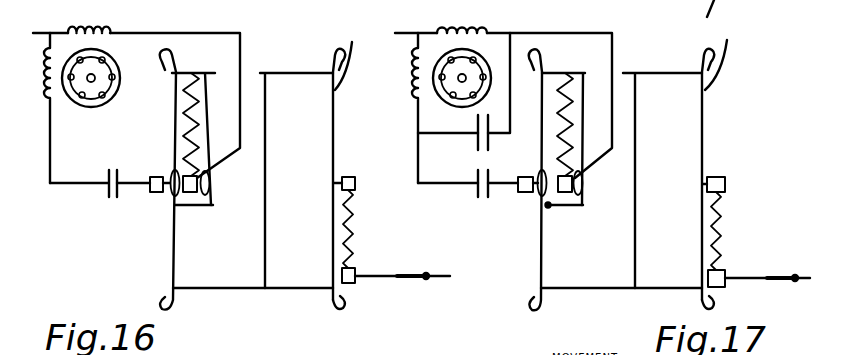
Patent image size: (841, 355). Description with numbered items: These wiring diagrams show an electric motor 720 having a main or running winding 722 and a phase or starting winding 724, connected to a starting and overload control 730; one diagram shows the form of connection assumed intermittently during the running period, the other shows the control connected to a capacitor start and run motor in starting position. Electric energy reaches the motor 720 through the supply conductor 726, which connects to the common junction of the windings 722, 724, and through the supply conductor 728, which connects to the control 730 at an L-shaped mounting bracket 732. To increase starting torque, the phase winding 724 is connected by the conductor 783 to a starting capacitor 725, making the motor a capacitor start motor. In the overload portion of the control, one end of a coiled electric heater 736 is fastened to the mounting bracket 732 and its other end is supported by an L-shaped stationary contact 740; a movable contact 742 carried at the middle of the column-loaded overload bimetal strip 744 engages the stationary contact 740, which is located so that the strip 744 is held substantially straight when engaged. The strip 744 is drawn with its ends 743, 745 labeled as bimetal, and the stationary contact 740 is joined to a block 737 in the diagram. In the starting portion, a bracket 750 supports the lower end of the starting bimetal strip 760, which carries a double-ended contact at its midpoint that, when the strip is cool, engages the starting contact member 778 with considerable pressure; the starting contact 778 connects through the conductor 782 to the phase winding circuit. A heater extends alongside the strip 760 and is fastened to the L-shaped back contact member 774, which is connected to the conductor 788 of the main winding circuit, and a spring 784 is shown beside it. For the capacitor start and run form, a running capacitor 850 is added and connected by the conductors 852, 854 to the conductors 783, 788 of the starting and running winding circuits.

In FIG. 16, the supply conductor 726 is at (39, 33).
In FIG. 17, the supply conductor 726 is at (402, 33).
In FIG. 16, the main or running winding 722 is at (111, 32).
In FIG. 17, the main or running winding 722 is at (476, 32).
In FIG. 16, the conductor 788 is at (205, 33).
In FIG. 17, the conductor 788 is at (560, 33).
In FIG. 16, the spring 784 is at (216, 90).
In FIG. 17, the spring 784 is at (590, 90).
In FIG. 16, the electric motor 720 is at (114, 92).
In FIG. 17, the electric motor 720 is at (462, 78).
In FIG. 16, the phase or starting winding 724 is at (52, 106).
In FIG. 17, the phase or starting winding 724 is at (413, 62).
In FIG. 16, the conductor 783 is at (53, 166).
In FIG. 17, the conductor 783 is at (441, 188).
In FIG. 16, the conductor 782 is at (134, 183).
In FIG. 17, the conductor 782 is at (500, 197).
In FIG. 16, the starting capacitor 725 is at (109, 198).
In FIG. 17, the starting capacitor 725 is at (476, 196).
In FIG. 16, the starting contact member 778 is at (152, 196).
In FIG. 17, the starting contact member 778 is at (528, 177).
In FIG. 16, the back contact member 774 is at (188, 206).
In FIG. 17, the back contact member 774 is at (556, 206).
In FIG. 16, the starting bimetal strip 760 is at (174, 247).
In FIG. 17, the starting bimetal strip 760 is at (540, 263).
In FIG. 16, the bracket 750 is at (268, 138).
In FIG. 17, the bracket 750 is at (637, 170).
In FIG. 16, the bimetal strip end 743 is at (333, 60).
In FIG. 17, the bimetal strip end 743 is at (702, 60).
In FIG. 16, the overload bimetal strip 744 is at (335, 104).
In FIG. 17, the overload bimetal strip 744 is at (705, 101).
In FIG. 16, the movable contact 742 is at (336, 180).
In FIG. 17, the movable contact 742 is at (705, 180).
In FIG. 16, the stationary contact 740 is at (357, 182).
In FIG. 17, the stationary contact 740 is at (727, 184).
In FIG. 16, the coiled electric heater 736 is at (353, 236).
In FIG. 17, the coiled electric heater 736 is at (722, 237).
In FIG. 16, the contact block 737 is at (350, 285).
In FIG. 16, the supply conductor 728 is at (398, 280).
In FIG. 17, the supply conductor 728 is at (762, 282).
In FIG. 16, the starting and overload control 730 is at (242, 312).
In FIG. 17, the starting and overload control 730 is at (612, 319).
In FIG. 16, the bimetal strip lower end 745 is at (332, 303).
In FIG. 17, the bimetal strip lower end 745 is at (700, 305).
In FIG. 17, the conductor 852 is at (462, 133).
In FIG. 17, the running capacitor 850 is at (477, 140).
In FIG. 17, the conductor 854 is at (517, 130).
In FIG. 17, the L-shaped mounting bracket 732 is at (717, 289).